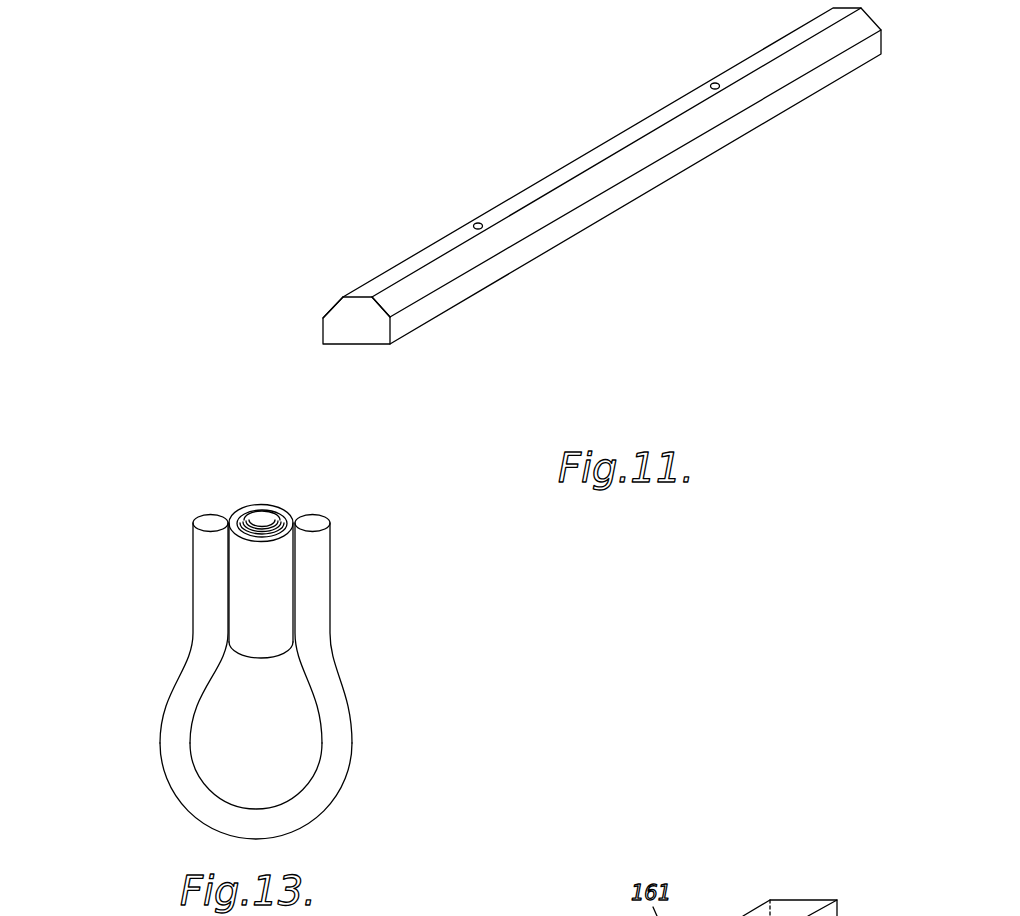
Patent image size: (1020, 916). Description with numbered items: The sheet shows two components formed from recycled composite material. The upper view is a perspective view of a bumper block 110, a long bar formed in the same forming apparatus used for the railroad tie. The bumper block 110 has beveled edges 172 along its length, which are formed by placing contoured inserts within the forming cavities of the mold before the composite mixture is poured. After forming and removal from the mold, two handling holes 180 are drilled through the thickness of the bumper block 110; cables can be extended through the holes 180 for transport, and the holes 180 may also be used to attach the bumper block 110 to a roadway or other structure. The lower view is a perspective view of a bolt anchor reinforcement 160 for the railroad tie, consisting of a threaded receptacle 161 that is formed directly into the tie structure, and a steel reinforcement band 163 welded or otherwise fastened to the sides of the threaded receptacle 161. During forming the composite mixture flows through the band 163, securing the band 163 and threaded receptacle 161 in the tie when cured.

In FIG. 11, the bumper block 110 is at (573, 227).
In FIG. 11, the handling holes 180 is at (475, 223).
In FIG. 11, the beveled edges 172 is at (333, 309).
In FIG. 13, the bolt anchor reinforcements 160 is at (186, 609).
In FIG. 13, the threaded receptacles 161 is at (262, 514).
In FIG. 13, the steel reinforcement bands 163 is at (351, 719).